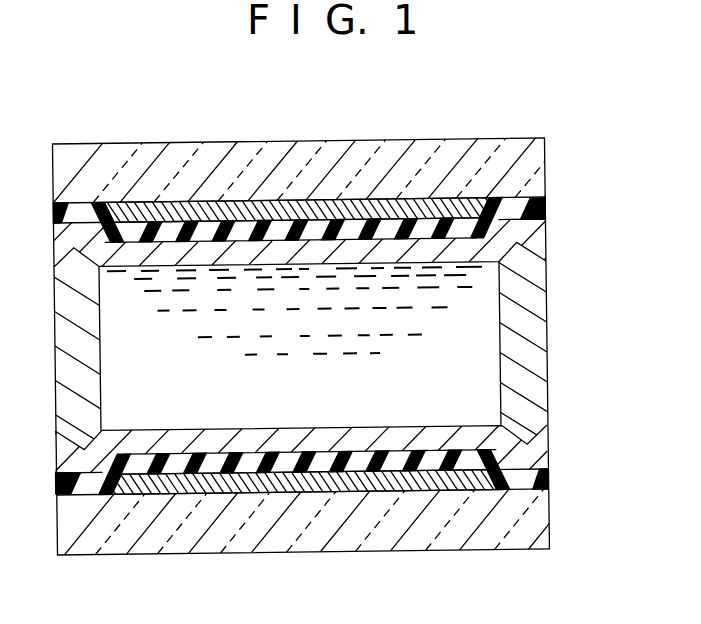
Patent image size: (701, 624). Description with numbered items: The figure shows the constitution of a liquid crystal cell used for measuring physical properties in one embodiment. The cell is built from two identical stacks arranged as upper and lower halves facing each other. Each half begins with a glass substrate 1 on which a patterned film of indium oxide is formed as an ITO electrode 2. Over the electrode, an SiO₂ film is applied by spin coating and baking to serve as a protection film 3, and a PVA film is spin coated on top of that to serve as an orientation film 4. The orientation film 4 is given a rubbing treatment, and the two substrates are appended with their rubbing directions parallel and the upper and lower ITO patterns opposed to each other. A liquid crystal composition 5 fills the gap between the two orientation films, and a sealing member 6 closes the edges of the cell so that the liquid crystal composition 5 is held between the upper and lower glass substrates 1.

The glass substrate 1 is at (515, 158).
The ITO electrode 2 is at (477, 198).
The protection film 3 is at (537, 213).
The orientation film 4 is at (537, 233).
The liquid crystal composition 5 is at (482, 380).
The sealing member 6 is at (532, 321).